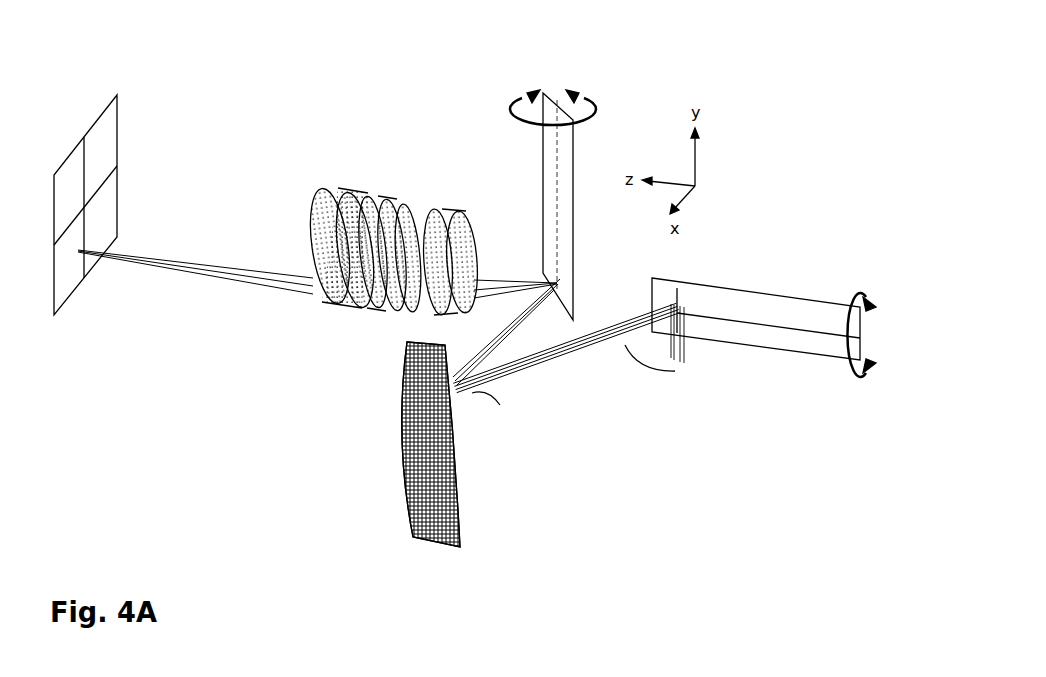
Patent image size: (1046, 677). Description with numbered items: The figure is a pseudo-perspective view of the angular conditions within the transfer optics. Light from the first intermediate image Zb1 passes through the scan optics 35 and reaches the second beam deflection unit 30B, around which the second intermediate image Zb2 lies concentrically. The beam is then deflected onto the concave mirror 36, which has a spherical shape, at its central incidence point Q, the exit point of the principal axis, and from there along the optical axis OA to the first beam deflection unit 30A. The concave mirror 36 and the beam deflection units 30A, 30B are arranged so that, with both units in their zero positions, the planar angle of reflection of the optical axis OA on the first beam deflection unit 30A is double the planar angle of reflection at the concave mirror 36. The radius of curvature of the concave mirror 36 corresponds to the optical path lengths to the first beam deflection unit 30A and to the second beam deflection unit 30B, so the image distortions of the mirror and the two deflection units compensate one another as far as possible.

The object plane / intermediate image (grid) Zb1 is at (117, 147).
The scan optics 35 is at (474, 179).
The second beam deflection unit 30B is at (543, 132).
The second intermediate image Zb2 is at (482, 332).
The central incidence point Q is at (426, 453).
The concave mirror 36 is at (457, 515).
The optical axis OA is at (565, 370).
The first beam deflection unit 30A is at (797, 353).